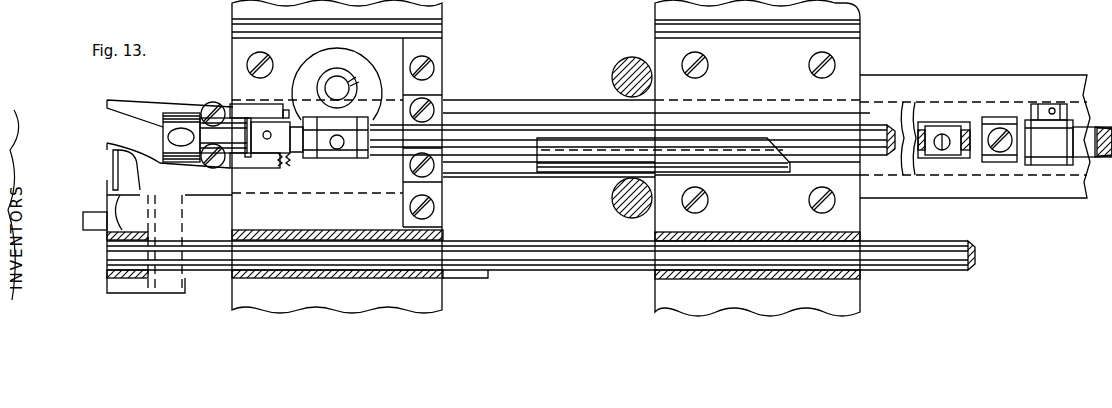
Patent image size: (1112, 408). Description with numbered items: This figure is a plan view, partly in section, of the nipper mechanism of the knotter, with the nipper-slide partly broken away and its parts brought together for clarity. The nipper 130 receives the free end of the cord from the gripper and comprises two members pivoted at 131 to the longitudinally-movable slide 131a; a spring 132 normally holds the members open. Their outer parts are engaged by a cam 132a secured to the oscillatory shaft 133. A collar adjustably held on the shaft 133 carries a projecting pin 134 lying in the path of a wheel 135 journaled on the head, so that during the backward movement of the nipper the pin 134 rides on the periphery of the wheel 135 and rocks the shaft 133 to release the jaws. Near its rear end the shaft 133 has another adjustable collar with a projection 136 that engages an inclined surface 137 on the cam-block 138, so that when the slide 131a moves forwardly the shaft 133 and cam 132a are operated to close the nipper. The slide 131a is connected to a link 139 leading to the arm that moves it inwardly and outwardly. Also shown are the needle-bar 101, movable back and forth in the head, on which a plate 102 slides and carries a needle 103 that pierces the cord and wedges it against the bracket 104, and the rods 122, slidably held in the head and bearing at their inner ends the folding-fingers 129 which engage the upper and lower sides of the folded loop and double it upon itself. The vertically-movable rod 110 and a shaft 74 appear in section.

The shaft 74 is at (631, 57).
The needle-bar 101 is at (484, 220).
The plate 102 is at (140, 288).
The needle 103 is at (113, 174).
The bracket 104 is at (145, 183).
The vertically-movable rod 110 is at (623, 211).
The rods 122 is at (507, 255).
The folding-fingers 129 is at (113, 228).
The nipper 130 is at (153, 134).
The pivot 131 is at (211, 101).
The longitudinally-movable slide 131a is at (547, 110).
The spring 132 is at (285, 110).
The cam 132a is at (252, 157).
The oscillatory shaft 133 is at (490, 137).
The pin 134 is at (337, 150).
The wheel 135 is at (365, 71).
The projection 136 is at (942, 153).
The inclined surface 137 is at (778, 128).
The cam-block 138 is at (571, 170).
The link 139 is at (1093, 157).